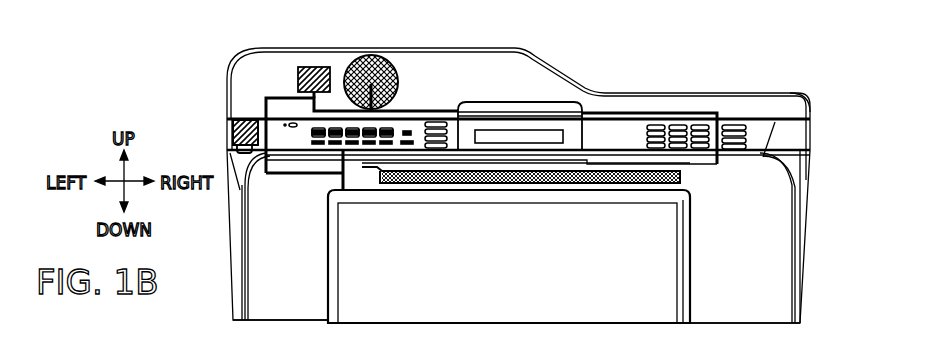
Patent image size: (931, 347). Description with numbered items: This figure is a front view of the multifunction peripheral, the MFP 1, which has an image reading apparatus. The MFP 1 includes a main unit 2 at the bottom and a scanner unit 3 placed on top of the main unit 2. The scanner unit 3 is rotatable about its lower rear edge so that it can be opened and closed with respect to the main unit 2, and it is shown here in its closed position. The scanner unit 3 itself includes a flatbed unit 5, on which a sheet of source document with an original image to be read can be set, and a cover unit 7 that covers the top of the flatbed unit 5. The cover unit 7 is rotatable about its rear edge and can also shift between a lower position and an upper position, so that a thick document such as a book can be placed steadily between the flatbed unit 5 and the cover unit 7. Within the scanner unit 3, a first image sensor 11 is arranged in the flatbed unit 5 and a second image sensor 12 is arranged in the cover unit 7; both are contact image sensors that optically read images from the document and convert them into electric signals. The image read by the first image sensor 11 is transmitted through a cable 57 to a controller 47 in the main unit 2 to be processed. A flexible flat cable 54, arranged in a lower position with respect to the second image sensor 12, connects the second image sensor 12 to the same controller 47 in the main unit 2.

The MFP 1 is at (215, 77).
The main unit 2 is at (802, 305).
The scanner unit 3 is at (612, 93).
The flatbed unit 5 is at (809, 131).
The cover unit 7 is at (803, 98).
The first image sensor 11 is at (233, 129).
The second image sensor 12 is at (308, 67).
The controller 47 is at (545, 181).
The flexible flat cable 54 is at (403, 104).
The cable 57 is at (588, 145).